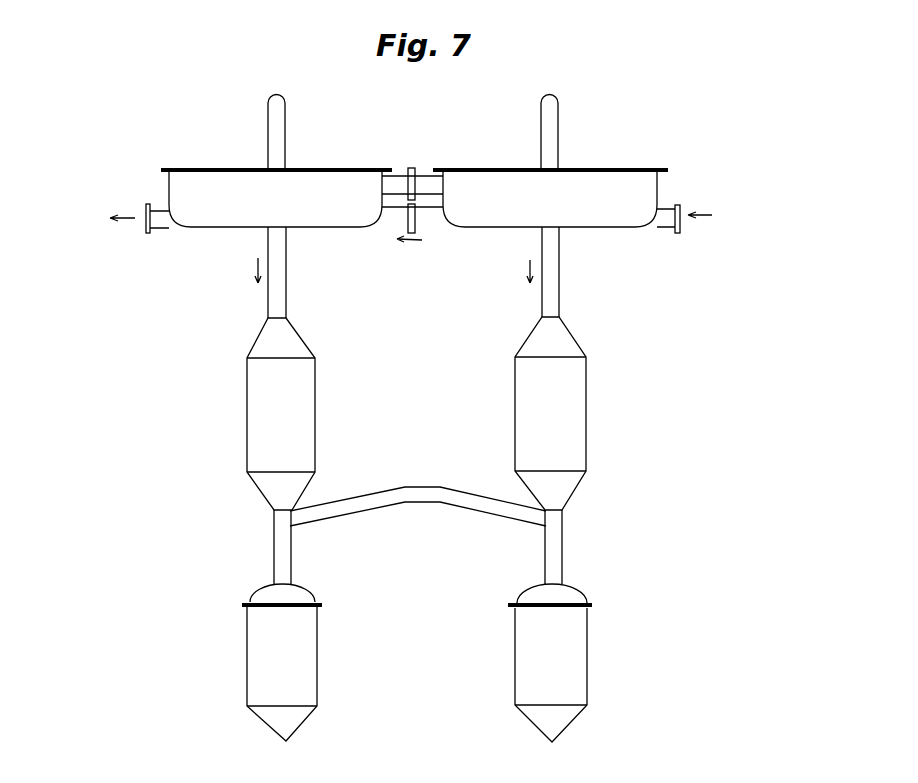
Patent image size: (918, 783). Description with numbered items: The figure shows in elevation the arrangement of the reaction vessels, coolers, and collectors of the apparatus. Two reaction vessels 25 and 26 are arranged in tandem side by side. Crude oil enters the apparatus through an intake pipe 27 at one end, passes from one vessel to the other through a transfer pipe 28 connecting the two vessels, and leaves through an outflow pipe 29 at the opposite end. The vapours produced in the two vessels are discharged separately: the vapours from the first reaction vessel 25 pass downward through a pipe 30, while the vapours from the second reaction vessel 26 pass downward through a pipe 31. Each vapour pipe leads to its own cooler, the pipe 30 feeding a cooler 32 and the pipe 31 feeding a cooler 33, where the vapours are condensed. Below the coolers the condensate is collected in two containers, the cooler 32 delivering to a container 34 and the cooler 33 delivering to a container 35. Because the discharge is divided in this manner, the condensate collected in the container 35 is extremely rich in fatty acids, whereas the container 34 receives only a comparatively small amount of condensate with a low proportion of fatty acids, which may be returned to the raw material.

The reaction vessel 25 is at (222, 178).
The reaction vessel 26 is at (481, 178).
The intake pipe 27 is at (678, 207).
The transfer pipe 28 is at (430, 223).
The outflow pipe 29 is at (158, 230).
The pipe 30 is at (282, 281).
The pipe 31 is at (558, 286).
The cooler 32 is at (250, 427).
The cooler 33 is at (582, 418).
The container 34 is at (252, 670).
The container 35 is at (583, 674).